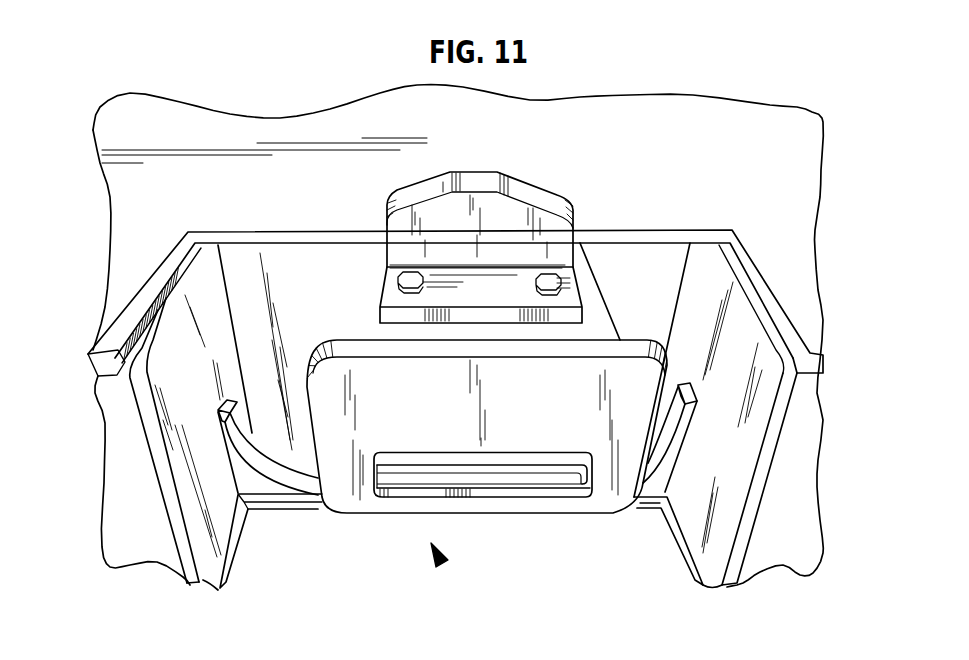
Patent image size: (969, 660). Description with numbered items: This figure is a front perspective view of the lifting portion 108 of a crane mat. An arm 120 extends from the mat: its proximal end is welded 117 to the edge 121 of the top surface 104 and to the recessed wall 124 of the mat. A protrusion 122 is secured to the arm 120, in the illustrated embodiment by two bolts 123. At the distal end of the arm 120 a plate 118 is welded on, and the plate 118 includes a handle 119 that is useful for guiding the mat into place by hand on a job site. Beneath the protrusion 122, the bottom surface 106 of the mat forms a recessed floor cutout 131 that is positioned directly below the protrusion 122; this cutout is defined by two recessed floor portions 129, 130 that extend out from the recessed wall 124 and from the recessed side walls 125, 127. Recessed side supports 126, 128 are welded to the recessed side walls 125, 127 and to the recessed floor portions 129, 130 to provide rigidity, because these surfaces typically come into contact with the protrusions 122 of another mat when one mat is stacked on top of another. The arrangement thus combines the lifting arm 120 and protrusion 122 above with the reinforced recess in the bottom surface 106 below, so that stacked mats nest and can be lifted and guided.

The top surface 104 is at (772, 152).
The bottom surface 106 is at (697, 583).
The lifting portion 108 is at (440, 562).
The weld 117 is at (370, 253).
The plate 118 is at (597, 500).
The handle 119 is at (410, 492).
The arm 120 is at (593, 303).
The edge 121 is at (280, 237).
The protrusion 122 is at (505, 210).
The bolts 123 is at (403, 267).
The recessed wall 124 is at (323, 258).
The recessed side wall 125 is at (220, 538).
The recessed side support 126 is at (268, 483).
The recessed side wall 127 is at (728, 515).
The recessed side support 128 is at (653, 482).
The recessed floor portion 129 is at (317, 508).
The recessed floor portion 130 is at (633, 503).
The recessed floor cutout 131 is at (507, 467).